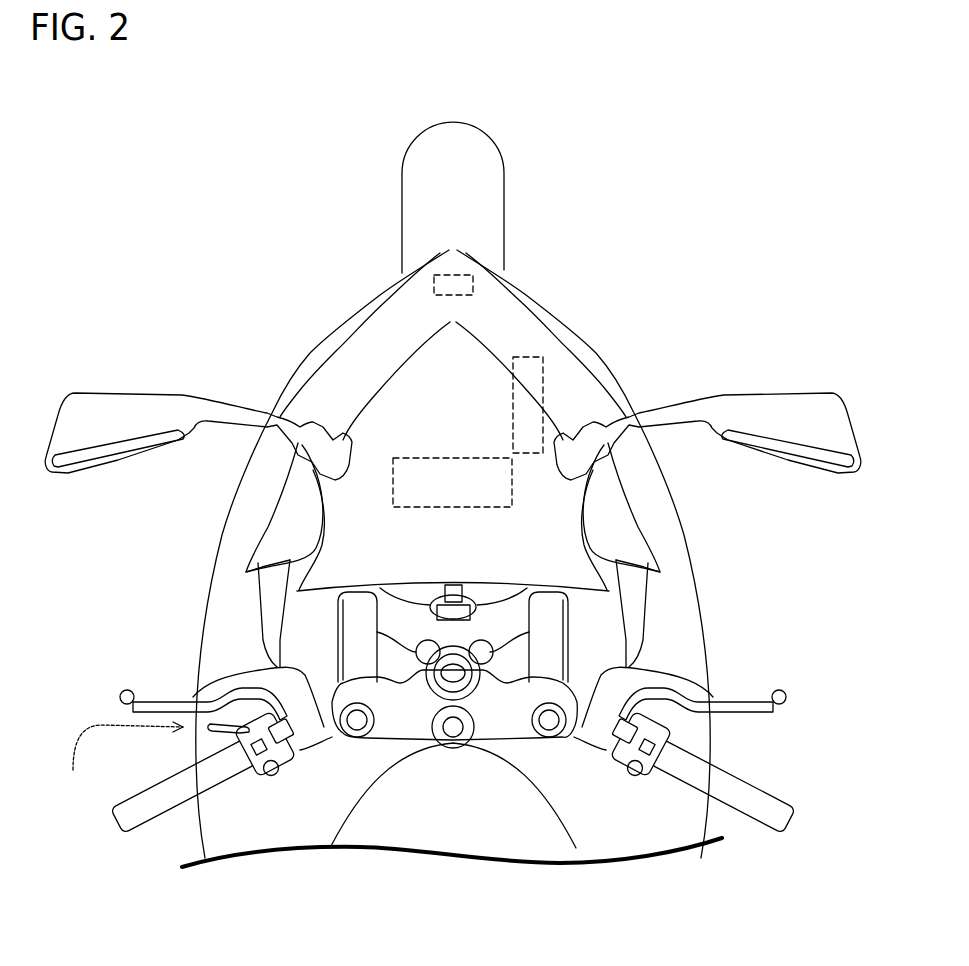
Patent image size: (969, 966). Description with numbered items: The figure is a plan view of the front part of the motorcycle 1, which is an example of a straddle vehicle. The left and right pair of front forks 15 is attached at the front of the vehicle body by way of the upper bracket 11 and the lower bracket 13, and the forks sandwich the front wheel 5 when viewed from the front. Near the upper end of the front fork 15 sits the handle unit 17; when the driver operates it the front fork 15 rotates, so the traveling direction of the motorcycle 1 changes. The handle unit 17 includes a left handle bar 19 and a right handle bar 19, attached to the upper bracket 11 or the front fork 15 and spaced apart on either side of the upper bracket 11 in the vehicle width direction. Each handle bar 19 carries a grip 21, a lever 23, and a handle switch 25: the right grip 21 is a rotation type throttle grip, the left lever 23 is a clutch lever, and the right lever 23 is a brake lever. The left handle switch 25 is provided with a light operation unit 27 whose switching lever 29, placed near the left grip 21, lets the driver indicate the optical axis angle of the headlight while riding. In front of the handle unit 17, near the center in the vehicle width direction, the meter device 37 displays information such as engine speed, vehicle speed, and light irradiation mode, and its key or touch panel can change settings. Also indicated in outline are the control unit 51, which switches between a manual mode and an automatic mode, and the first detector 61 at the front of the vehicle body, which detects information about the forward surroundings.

The motorcycle 1 is at (126, 169).
The front wheel 5 is at (493, 155).
The upper bracket 11 is at (410, 725).
The lower bracket 13 is at (407, 620).
The front fork 15 is at (360, 645).
The handle unit 17 is at (655, 648).
The handle bar 19 is at (296, 748).
The grip 21 is at (147, 825).
The lever 23 is at (173, 700).
The handle switch 25 is at (253, 785).
The light operation unit 27 is at (118, 764).
The switching lever 29 is at (222, 730).
The meter device 37 is at (410, 457).
The control unit 51 is at (527, 357).
The first detector 61 is at (453, 274).